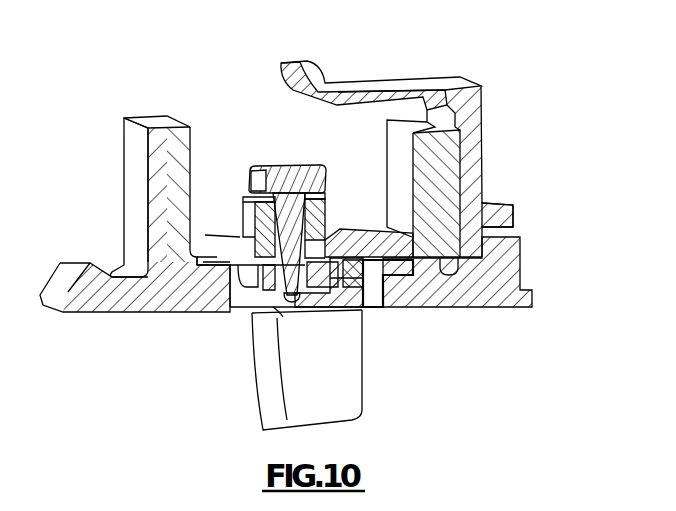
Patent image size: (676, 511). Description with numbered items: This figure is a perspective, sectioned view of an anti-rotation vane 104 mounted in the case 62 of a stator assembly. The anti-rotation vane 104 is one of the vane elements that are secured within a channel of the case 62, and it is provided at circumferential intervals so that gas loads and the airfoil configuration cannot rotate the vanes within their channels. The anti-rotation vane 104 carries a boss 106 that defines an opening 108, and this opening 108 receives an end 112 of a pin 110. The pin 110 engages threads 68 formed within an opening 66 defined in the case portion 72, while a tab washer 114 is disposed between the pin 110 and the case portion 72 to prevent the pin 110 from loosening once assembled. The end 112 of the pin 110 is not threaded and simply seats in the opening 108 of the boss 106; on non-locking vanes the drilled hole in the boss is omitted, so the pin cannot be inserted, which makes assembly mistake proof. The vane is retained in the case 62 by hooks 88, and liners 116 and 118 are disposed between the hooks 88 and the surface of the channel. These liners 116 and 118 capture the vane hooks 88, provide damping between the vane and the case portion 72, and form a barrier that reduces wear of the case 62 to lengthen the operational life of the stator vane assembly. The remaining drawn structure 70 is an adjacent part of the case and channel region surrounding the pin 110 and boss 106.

The case 62 is at (514, 60).
The opening 66 is at (257, 172).
The threads 68 is at (313, 228).
The upright post 70 is at (470, 130).
The case portion 72 is at (186, 147).
The hooks 88 is at (413, 268).
The anti-rotation vane 104 is at (238, 385).
The boss 106 is at (252, 228).
The opening 108 is at (277, 307).
The pin 110 is at (302, 185).
The end of the pin 112 is at (275, 307).
The tab washer 114 is at (328, 178).
The liner 116 is at (402, 268).
The liner 118 is at (218, 305).